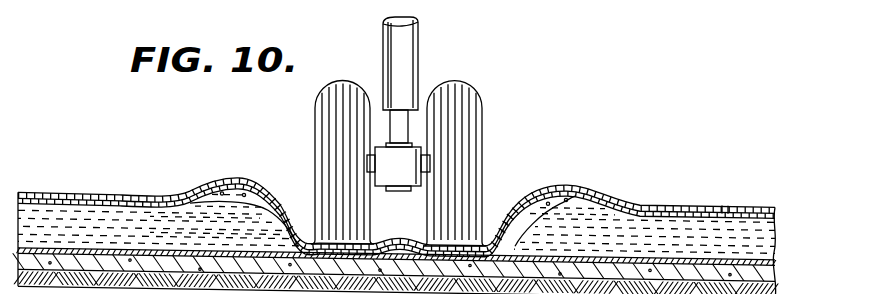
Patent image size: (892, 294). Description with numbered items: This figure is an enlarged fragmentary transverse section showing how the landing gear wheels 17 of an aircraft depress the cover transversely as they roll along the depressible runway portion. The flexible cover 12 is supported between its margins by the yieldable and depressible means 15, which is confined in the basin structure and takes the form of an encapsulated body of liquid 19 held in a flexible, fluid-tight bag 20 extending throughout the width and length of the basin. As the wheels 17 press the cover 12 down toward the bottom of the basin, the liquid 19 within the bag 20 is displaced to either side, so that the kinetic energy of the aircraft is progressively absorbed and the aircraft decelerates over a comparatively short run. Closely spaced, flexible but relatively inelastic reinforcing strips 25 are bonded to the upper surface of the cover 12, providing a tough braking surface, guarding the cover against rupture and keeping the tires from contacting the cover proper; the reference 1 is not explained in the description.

The laminated sheet structure 1 is at (397, 217).
The flexible cover 12 is at (133, 168).
The yieldable and depressible means 15 is at (62, 222).
The landing gear wheels 17 is at (488, 118).
The body of liquid 19 is at (181, 212).
The flexible fluid-tight bag 20 is at (725, 206).
The reinforcing strips 25 is at (289, 199).